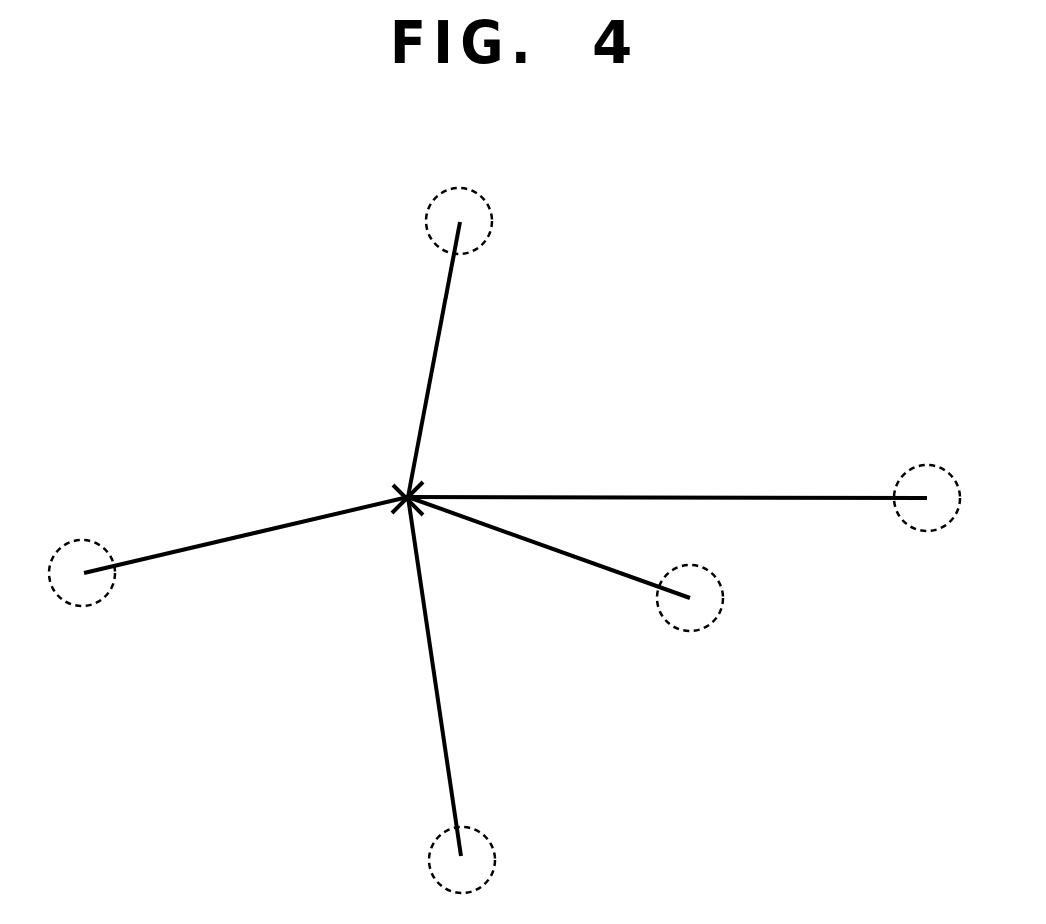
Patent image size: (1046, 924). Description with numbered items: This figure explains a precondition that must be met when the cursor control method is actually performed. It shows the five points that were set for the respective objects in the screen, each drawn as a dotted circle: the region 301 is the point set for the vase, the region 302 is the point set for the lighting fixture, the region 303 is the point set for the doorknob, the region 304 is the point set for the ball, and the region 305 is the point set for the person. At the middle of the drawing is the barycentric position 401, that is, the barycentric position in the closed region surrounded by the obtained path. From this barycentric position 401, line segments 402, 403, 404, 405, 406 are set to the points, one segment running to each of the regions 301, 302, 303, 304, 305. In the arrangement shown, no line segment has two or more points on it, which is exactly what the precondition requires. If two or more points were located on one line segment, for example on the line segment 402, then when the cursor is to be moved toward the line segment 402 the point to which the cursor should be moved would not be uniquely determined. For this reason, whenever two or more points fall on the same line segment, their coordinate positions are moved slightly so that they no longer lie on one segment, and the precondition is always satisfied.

The region 301 is at (925, 466).
The region 302 is at (492, 225).
The region 303 is at (91, 543).
The region 304 is at (490, 873).
The region 305 is at (695, 630).
The barycentric position 401 is at (401, 484).
The line segment 402 is at (443, 322).
The line segment 403 is at (198, 545).
The line segment 404 is at (427, 650).
The line segment 405 is at (513, 535).
The line segment 406 is at (653, 496).